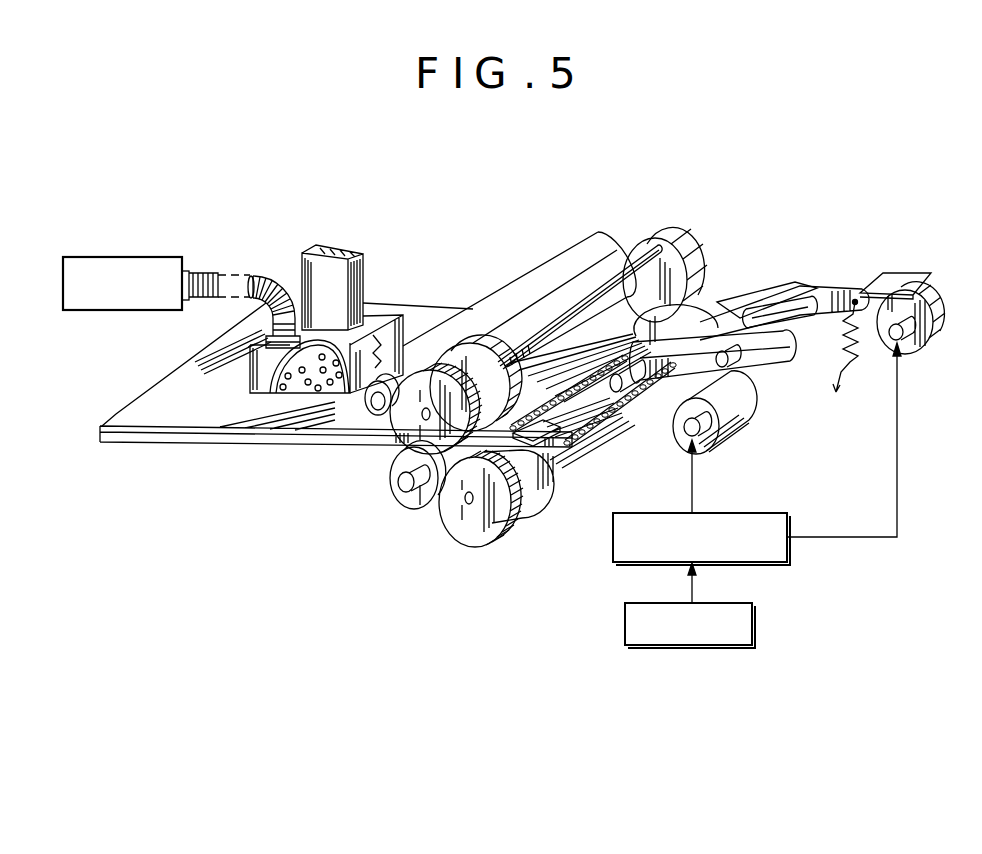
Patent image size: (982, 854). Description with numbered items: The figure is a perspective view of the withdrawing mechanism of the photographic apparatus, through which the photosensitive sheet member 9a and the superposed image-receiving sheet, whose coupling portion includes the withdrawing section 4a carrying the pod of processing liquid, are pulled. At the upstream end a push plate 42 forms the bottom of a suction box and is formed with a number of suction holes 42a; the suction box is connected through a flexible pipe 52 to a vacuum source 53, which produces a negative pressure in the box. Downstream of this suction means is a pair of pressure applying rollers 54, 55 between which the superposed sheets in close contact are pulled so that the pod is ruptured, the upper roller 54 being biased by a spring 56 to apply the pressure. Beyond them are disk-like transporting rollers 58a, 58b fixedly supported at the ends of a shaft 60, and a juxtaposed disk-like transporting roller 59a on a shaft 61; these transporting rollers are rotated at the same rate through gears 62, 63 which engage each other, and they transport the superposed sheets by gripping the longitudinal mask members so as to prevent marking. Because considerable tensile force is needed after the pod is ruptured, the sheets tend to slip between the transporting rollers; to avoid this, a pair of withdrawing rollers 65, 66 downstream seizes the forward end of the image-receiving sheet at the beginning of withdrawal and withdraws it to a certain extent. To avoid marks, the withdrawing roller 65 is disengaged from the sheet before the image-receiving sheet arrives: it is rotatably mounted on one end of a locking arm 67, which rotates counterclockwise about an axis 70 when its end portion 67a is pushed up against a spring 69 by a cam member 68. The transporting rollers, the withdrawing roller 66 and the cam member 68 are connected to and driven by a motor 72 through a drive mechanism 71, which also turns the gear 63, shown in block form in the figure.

The withdrawing section 4a is at (207, 443).
The photosensitive sheet member 9a is at (401, 304).
The push plate 42 is at (249, 378).
The suction holes 42a is at (308, 380).
The flexible pipe 52 is at (204, 272).
The vacuum source 53 is at (124, 258).
The pressure applying roller 54 is at (538, 289).
The pressure applying roller 55 is at (419, 504).
The spring 56 is at (364, 399).
The disk-like transporting roller 58a is at (462, 350).
The disk-like transporting roller 58b is at (667, 240).
The disk-like transporting roller 59a is at (547, 470).
The shaft 60 is at (613, 288).
The shaft 61 is at (620, 412).
The gear 62 is at (407, 413).
The gear 63 is at (487, 530).
The withdrawing roller 65 is at (700, 317).
The withdrawing roller 66 is at (745, 422).
The locking arm 67 is at (834, 293).
The end portion 67a is at (903, 281).
The cam member 68 is at (915, 348).
The spring 69 is at (851, 362).
The axis 70 is at (737, 364).
The drive mechanism 71 is at (721, 513).
The motor 72 is at (751, 611).